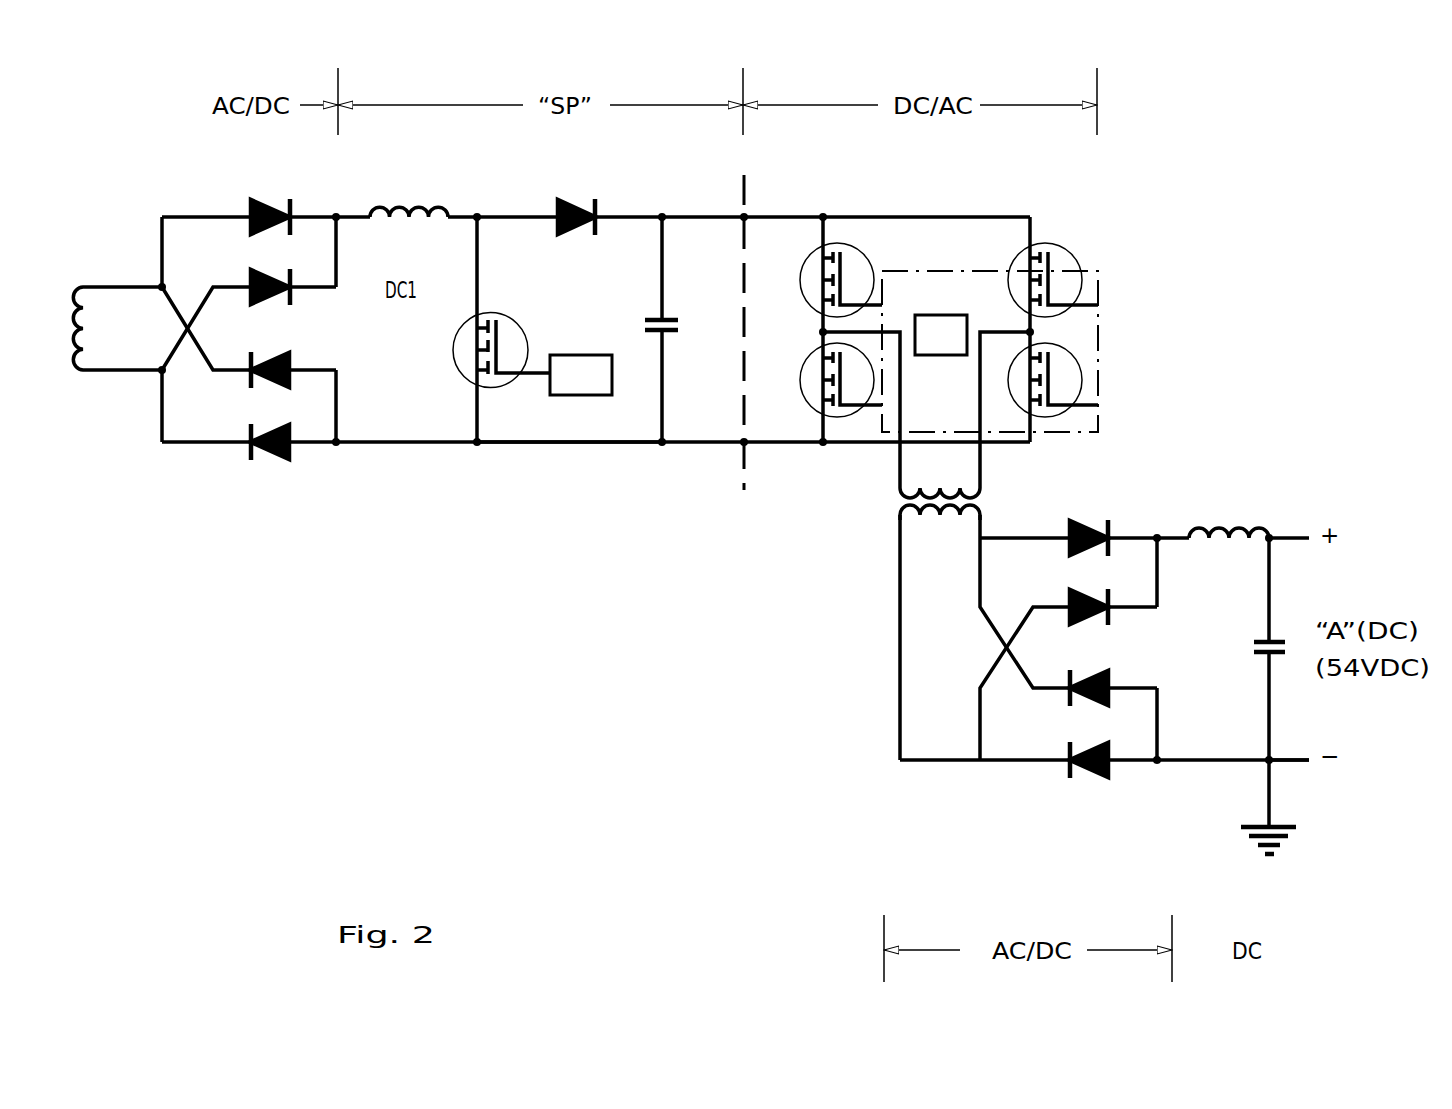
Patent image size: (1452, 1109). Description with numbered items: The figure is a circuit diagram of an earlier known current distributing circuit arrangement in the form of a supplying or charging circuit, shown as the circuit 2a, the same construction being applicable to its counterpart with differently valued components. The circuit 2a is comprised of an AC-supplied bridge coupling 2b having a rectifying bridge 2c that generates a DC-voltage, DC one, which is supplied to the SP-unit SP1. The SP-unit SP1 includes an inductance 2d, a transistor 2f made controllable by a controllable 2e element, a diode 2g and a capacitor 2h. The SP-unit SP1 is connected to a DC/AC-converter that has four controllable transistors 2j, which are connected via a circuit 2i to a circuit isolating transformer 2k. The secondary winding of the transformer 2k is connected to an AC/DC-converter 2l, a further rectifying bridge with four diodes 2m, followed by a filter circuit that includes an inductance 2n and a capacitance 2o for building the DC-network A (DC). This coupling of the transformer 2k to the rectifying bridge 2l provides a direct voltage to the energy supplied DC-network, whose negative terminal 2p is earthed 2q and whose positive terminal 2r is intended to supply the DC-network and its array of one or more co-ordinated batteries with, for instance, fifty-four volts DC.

The circuit 2a is at (569, 469).
The AC-supplied bridge coupling 2b is at (117, 352).
The rectifying bridge 2c is at (310, 329).
The inductance 2d is at (409, 190).
The controllable 2e is at (581, 391).
The transistor 2f is at (507, 307).
The diode 2g is at (576, 200).
The capacitor 2h is at (650, 315).
The circuit 2i is at (990, 351).
The controllable transistors 2j is at (1065, 233).
The circuit isolating transformer 2k is at (917, 481).
The AC/DC-converter 2l is at (1139, 649).
The diodes 2m is at (1118, 681).
The inductance 2n is at (1229, 517).
The capacitance 2o is at (1261, 665).
The negative terminal 2p is at (1302, 765).
The earth 2q is at (1250, 841).
The positive terminal 2r is at (1290, 532).
The SP-unit SP1 is at (431, 472).